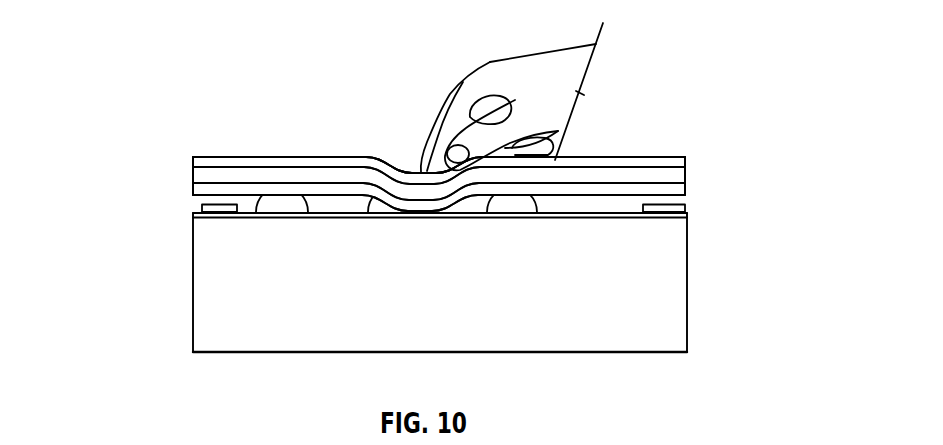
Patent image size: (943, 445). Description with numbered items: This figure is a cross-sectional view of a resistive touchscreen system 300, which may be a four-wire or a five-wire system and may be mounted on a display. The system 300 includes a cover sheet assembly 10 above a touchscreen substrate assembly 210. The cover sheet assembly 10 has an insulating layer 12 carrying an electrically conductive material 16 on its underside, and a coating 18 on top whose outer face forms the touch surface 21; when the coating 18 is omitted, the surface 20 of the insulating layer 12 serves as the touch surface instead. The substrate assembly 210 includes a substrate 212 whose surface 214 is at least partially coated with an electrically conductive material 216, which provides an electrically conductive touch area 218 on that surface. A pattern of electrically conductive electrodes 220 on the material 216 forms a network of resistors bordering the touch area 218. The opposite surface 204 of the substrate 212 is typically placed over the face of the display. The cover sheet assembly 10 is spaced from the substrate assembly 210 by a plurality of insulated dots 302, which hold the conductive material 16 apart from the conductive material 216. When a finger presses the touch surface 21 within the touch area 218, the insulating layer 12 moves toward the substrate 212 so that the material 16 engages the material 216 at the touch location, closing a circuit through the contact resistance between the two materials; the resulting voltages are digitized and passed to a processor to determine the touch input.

The resistive touchscreen system 300 is at (423, 204).
The cover sheet assembly 10 is at (443, 150).
The insulating layer 12 is at (653, 173).
The electrically conductive material 16 is at (685, 190).
The coating 18 is at (280, 162).
The surface 20 is at (624, 157).
The touch surface 21 is at (576, 157).
The electrically conductive touch area 218 is at (321, 200).
The electrically conductive electrodes 220 is at (202, 207).
The insulated dots 302 is at (282, 211).
The touchscreen substrate assembly 210 is at (445, 299).
The substrate 212 is at (471, 332).
The surface 214 is at (687, 218).
The electrically conductive material 216 is at (192, 214).
The surface 204 is at (557, 352).